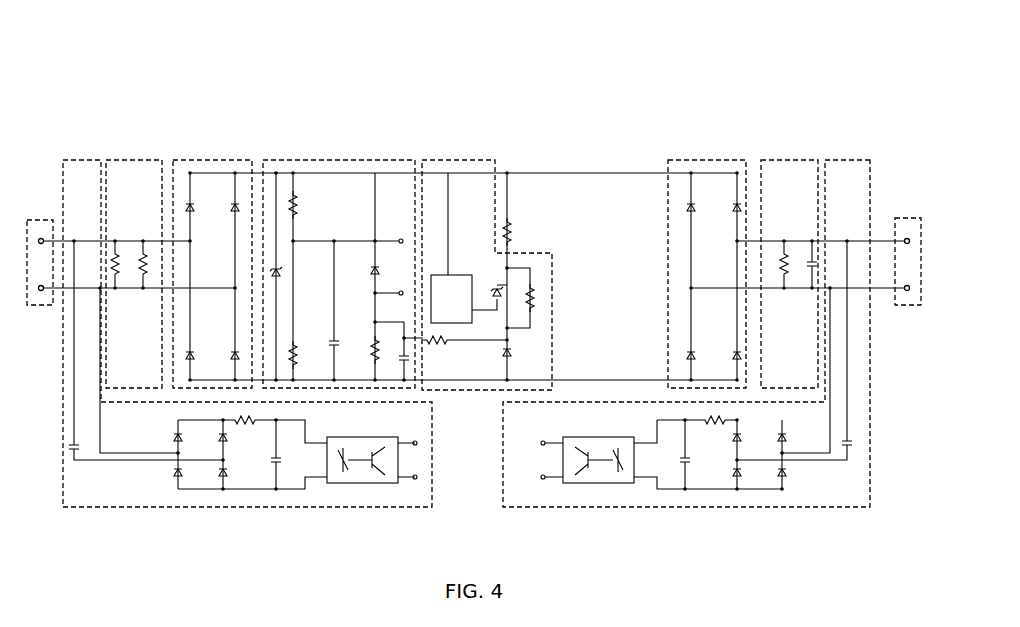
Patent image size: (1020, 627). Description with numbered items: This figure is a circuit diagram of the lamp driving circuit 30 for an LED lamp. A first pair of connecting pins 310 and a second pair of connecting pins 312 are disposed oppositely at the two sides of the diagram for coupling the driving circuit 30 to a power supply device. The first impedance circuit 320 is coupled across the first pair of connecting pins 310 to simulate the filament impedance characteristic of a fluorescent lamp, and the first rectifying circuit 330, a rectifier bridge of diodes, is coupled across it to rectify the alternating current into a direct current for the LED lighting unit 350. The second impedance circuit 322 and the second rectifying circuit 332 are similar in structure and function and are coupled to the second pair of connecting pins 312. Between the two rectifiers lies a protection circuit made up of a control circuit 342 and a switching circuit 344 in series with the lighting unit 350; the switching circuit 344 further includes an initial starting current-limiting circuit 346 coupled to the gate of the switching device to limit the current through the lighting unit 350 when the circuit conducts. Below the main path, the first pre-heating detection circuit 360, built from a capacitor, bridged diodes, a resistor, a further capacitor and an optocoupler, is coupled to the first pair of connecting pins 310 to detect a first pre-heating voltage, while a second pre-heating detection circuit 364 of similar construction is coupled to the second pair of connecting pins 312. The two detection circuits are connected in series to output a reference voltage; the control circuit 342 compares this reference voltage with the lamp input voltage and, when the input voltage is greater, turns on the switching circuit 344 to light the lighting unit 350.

The lamp driving circuit 30 is at (166, 61).
The first pair of connecting pins 310 is at (43, 220).
The second pair of connecting pins 312 is at (916, 218).
The first impedance circuit 320 is at (138, 160).
The second impedance circuit 322 is at (790, 160).
The first rectifying circuit 330 is at (212, 160).
The second rectifying circuit 332 is at (708, 160).
The control circuit 342 is at (337, 160).
The switching circuit 344 is at (462, 160).
The initial starting current-limiting circuit 346 is at (452, 275).
The LED lighting unit 350 is at (512, 230).
The first pre-heating detection circuit 360 is at (84, 160).
The second detection circuit 364 is at (847, 160).